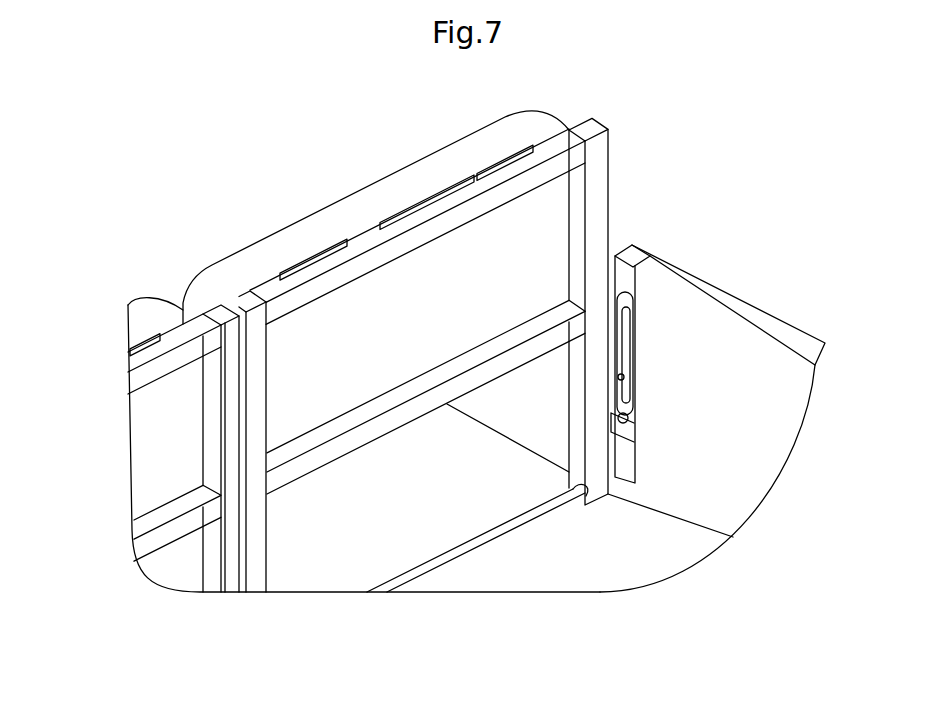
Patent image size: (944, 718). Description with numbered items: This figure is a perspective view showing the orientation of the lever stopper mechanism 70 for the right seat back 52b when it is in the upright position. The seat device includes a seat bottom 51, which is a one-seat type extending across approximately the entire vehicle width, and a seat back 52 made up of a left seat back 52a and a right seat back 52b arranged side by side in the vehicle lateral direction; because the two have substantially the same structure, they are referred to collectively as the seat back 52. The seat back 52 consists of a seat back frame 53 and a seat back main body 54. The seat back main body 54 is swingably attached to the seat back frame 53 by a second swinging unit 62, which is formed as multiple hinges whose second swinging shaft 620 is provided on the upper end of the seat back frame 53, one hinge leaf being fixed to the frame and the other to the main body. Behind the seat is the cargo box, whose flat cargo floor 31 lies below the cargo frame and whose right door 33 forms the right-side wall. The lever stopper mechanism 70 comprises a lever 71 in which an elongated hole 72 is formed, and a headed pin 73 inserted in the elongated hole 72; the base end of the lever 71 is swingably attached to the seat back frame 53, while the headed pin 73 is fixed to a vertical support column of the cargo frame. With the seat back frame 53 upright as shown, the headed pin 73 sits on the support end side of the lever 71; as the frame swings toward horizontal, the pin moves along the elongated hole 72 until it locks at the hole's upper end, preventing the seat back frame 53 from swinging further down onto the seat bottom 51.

The cargo floor 31 is at (662, 550).
The right door 33 is at (760, 322).
The seat bottom 51 is at (302, 562).
The seat back 52 is at (331, 337).
The left seat back 52a is at (139, 299).
The right seat back 52b is at (379, 178).
The seat back frame 53 is at (598, 175).
The seat back main body 54 is at (257, 255).
The second swinging unit 62 is at (331, 250).
The second swinging shaft 620 is at (305, 257).
The lever stopper mechanism 70 is at (636, 345).
The lever 71 is at (625, 293).
The elongated hole 72 is at (624, 374).
The headed pin 73 is at (628, 420).